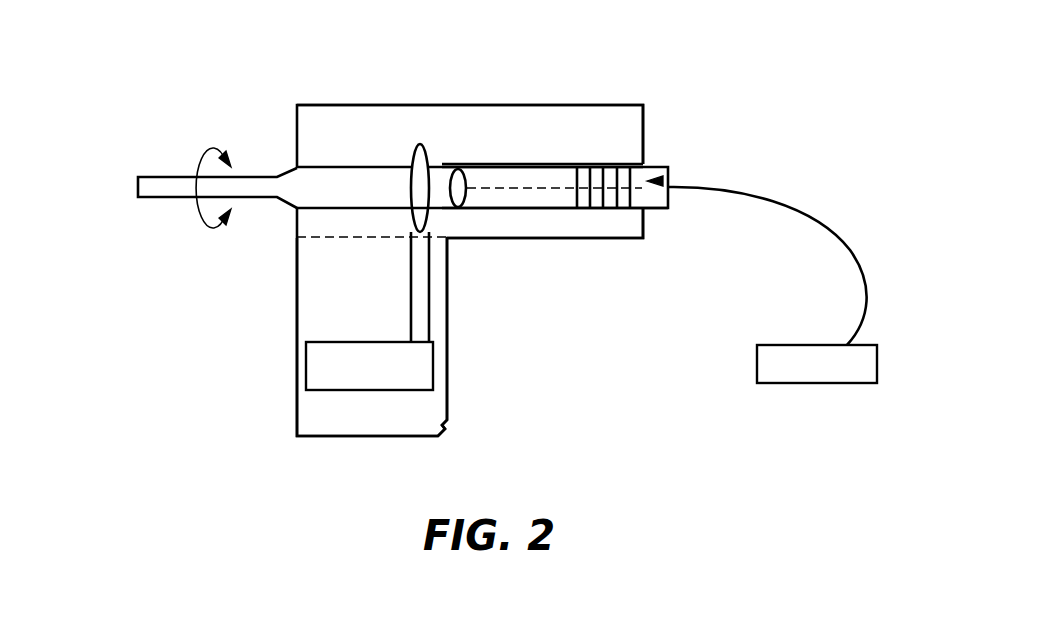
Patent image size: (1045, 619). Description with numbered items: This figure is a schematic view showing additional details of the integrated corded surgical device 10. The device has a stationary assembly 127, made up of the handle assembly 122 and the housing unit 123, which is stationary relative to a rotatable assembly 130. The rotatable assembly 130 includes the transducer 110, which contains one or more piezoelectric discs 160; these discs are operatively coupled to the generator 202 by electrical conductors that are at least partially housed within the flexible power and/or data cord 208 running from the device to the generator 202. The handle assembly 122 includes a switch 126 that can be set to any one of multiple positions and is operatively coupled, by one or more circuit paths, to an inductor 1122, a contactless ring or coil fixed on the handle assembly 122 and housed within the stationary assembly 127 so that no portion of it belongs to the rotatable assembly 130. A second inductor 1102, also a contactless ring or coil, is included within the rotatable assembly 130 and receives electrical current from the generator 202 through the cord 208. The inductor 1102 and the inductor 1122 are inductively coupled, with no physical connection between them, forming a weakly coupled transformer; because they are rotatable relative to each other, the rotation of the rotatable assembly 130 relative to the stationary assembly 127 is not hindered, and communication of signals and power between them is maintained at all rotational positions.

The surgical device 10 is at (288, 94).
The transducer 110 is at (663, 181).
The handle assembly 122 is at (447, 398).
The housing unit 123 is at (587, 105).
The switch 126 is at (306, 369).
The stationary assembly 127 is at (343, 140).
The rotatable assembly 130 is at (118, 181).
The piezoelectric discs 160 is at (603, 208).
The generator 202 is at (877, 363).
The flexible cord 208 is at (855, 257).
The inductor 1102 is at (458, 207).
The inductor 1122 is at (420, 143).